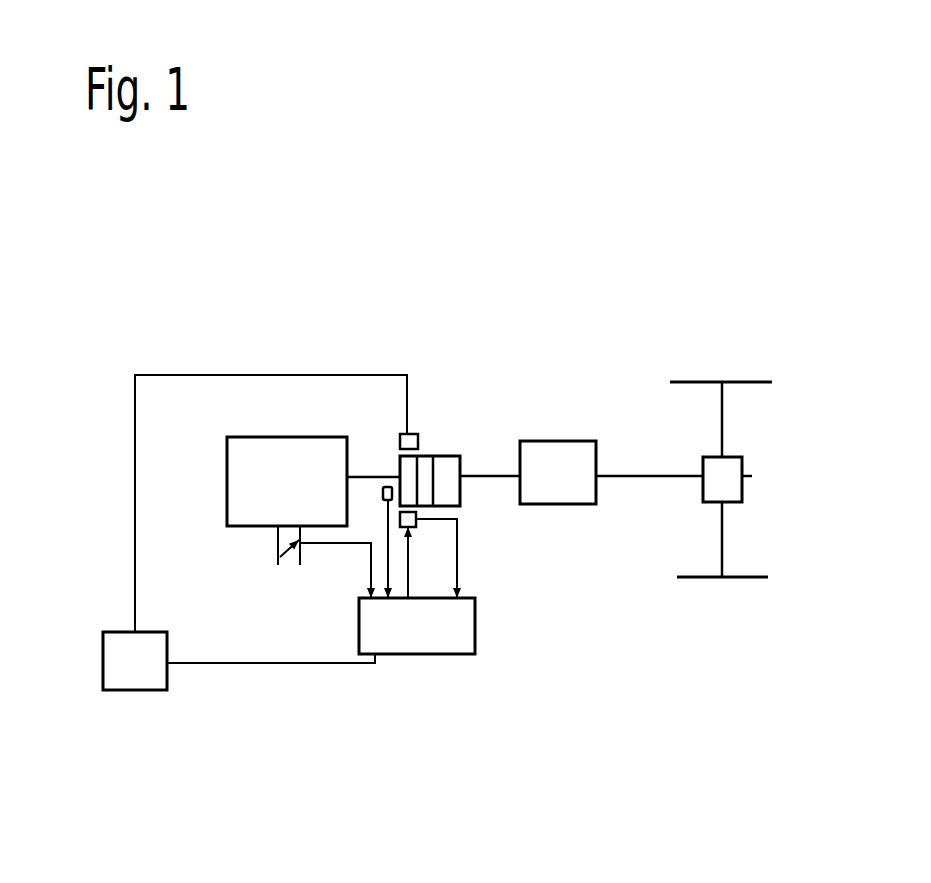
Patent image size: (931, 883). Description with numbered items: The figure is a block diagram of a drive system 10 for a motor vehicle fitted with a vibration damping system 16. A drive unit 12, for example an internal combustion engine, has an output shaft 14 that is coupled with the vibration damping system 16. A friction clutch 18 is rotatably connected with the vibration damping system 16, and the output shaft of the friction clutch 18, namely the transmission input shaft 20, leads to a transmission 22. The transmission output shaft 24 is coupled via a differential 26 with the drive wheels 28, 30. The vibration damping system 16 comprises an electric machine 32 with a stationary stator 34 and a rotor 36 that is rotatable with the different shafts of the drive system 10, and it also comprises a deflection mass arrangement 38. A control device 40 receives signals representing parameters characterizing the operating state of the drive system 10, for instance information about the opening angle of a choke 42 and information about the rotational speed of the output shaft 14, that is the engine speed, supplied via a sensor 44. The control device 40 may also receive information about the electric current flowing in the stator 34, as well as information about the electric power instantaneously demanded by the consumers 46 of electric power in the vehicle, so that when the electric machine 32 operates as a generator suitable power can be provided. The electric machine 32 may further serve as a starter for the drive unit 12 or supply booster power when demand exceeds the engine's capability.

The drive system 10 is at (545, 292).
The drive unit 12 is at (296, 436).
The output shaft 14 is at (376, 477).
The vibration damping system 16 is at (442, 392).
The friction clutch 18 is at (480, 440).
The transmission input shaft 20 is at (478, 477).
The transmission 22 is at (597, 458).
The transmission output shaft 24 is at (633, 477).
The differential 26 is at (752, 476).
The drive wheel 28 is at (740, 382).
The drive wheel 30 is at (755, 578).
The electric machine 32 is at (413, 432).
The stator 34 is at (415, 523).
The rotor 36 is at (410, 497).
The deflection mass arrangement 38 is at (427, 457).
The control device 40 is at (455, 655).
The choke 42 is at (276, 542).
The sensor 44 is at (383, 493).
The consumers 46 is at (140, 690).